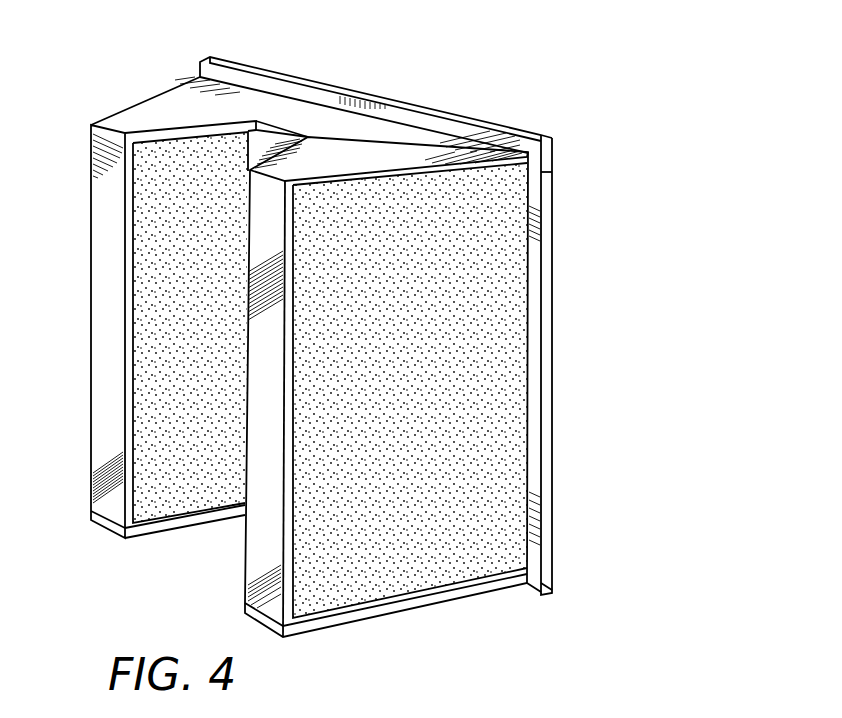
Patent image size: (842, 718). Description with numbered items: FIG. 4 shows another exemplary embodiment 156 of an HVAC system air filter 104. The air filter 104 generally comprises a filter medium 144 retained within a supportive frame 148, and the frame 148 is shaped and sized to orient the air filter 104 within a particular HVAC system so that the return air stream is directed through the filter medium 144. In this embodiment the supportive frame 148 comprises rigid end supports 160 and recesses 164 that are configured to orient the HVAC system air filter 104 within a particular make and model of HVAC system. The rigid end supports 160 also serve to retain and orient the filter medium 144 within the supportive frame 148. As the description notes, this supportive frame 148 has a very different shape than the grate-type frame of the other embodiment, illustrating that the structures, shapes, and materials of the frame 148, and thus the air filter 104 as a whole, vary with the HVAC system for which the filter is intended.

The exemplary embodiment 156 is at (611, 145).
The supportive frame 148 is at (333, 97).
The recesses 164 is at (478, 121).
The HVAC system air filter 104 is at (105, 525).
The rigid end supports 160 is at (145, 100).
The filter medium 144 is at (162, 240).